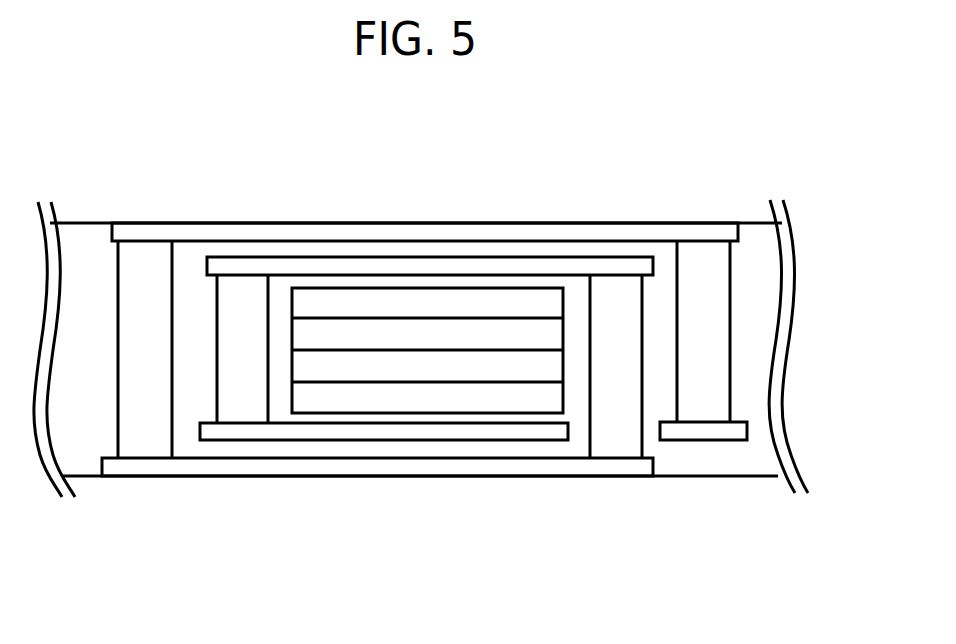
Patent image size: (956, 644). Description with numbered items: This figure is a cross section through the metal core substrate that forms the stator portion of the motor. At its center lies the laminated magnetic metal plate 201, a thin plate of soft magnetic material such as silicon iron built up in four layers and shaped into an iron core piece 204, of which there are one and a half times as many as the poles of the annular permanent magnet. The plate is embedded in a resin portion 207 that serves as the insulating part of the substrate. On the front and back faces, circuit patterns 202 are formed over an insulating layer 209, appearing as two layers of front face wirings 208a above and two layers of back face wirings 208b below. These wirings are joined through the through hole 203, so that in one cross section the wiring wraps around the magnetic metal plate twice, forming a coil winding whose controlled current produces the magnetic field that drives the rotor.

The magnetic metal plate 201 is at (510, 302).
The circuit pattern 202 is at (425, 198).
The through hole 203 is at (708, 385).
The iron core piece 204 is at (427, 267).
The resin portion 207 is at (750, 300).
The front face wiring 208a is at (233, 232).
The back face wiring 208b is at (223, 470).
The insulating layer 209 is at (442, 245).